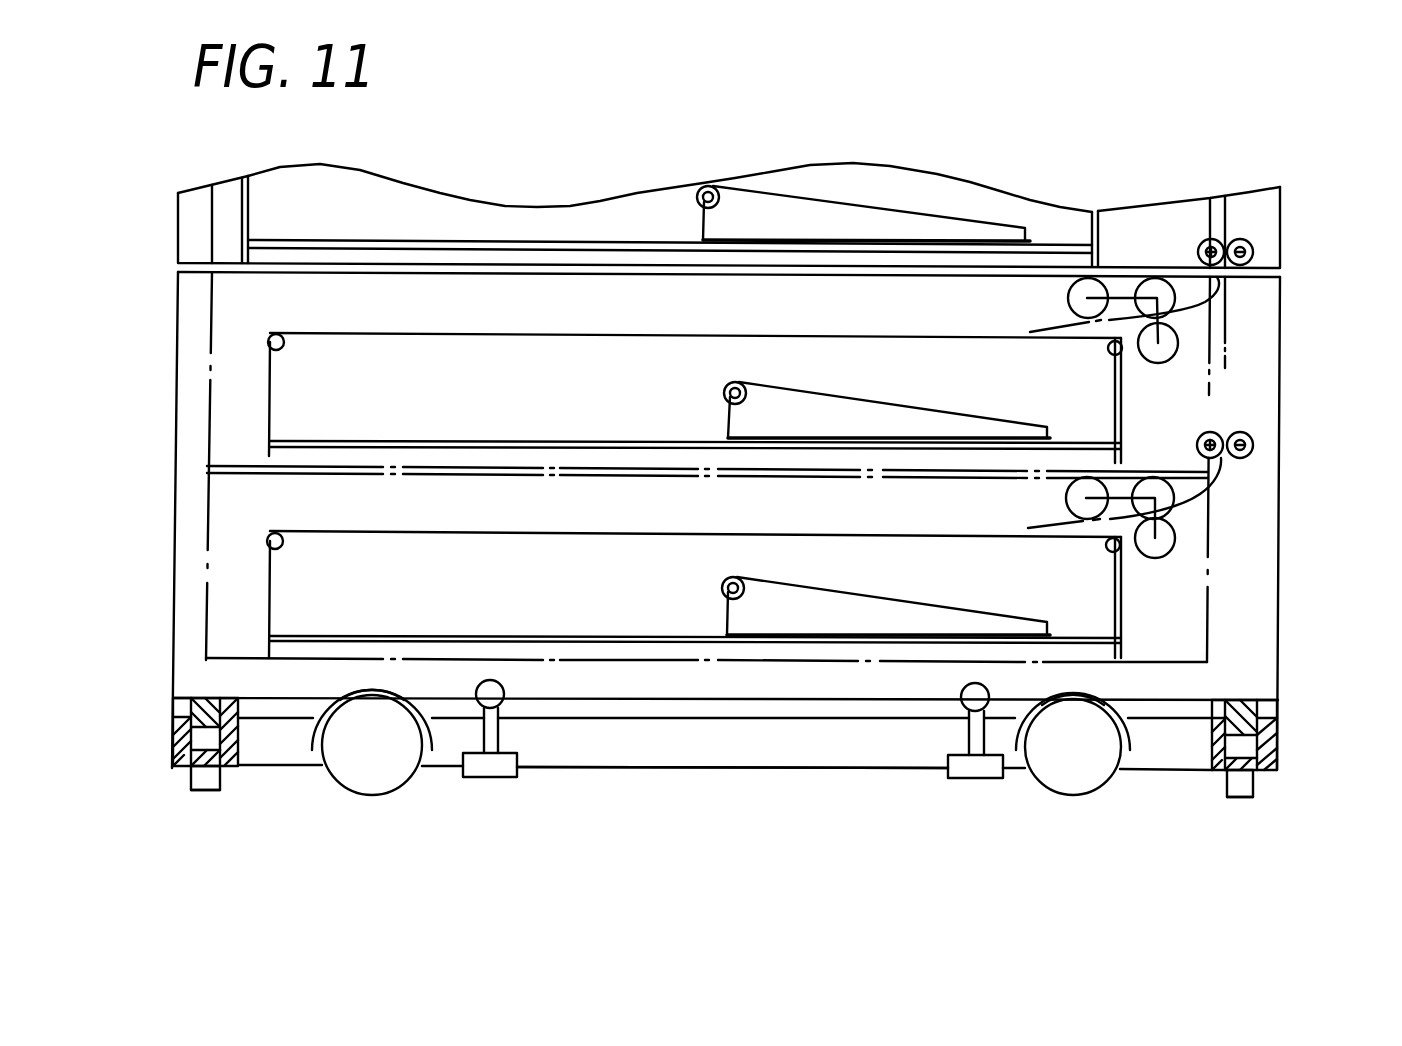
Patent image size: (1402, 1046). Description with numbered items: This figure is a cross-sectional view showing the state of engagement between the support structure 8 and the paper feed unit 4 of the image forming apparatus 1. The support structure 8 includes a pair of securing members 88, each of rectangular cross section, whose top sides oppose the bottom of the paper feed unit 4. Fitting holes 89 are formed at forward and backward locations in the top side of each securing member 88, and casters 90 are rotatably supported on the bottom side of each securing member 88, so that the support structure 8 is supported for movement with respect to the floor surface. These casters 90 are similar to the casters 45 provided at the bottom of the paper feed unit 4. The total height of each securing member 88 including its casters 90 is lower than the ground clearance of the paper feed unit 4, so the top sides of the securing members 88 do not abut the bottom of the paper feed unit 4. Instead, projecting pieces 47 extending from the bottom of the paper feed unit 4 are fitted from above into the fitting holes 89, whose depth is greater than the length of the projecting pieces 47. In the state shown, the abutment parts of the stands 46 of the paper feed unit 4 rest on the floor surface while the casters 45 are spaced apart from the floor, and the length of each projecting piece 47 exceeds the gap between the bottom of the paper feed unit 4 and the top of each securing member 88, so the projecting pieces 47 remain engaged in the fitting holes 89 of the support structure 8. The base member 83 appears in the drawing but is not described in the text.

The image forming apparatus 1 is at (1299, 386).
The paper feed unit 4 is at (1280, 222).
The support structure 8 is at (820, 802).
The casters 45 is at (403, 785).
The stands 46 is at (498, 780).
The projecting pieces 47 is at (205, 712).
The base frame 83 is at (705, 770).
The securing members 88 is at (178, 763).
The fitting holes 89 is at (188, 742).
The casters 90 is at (205, 793).